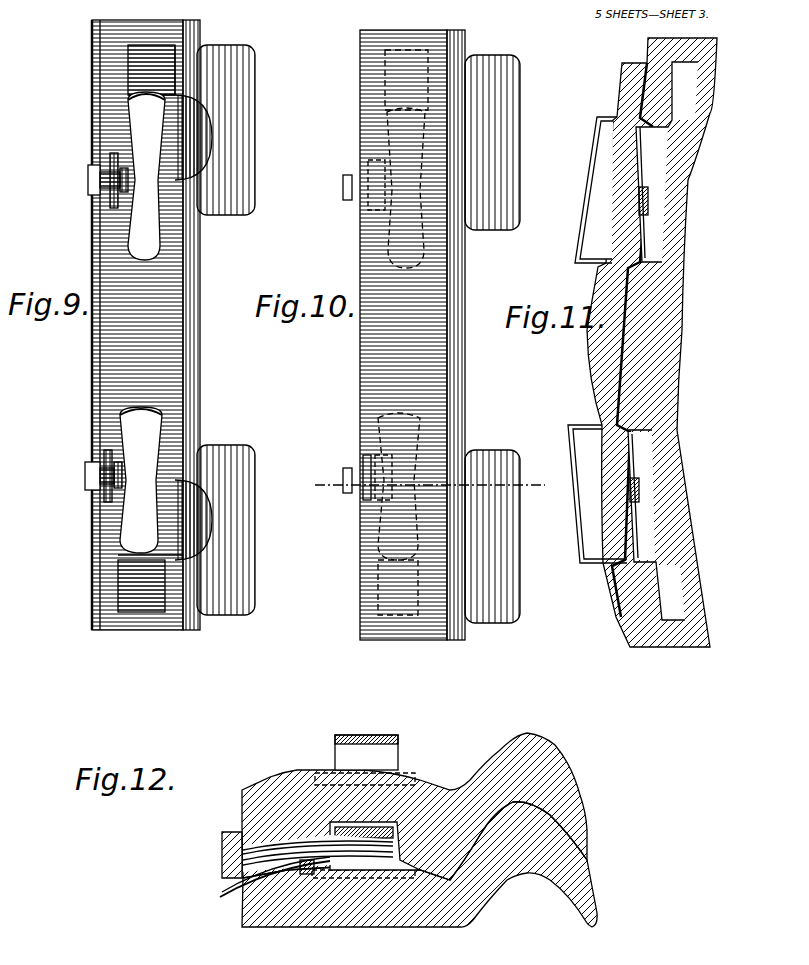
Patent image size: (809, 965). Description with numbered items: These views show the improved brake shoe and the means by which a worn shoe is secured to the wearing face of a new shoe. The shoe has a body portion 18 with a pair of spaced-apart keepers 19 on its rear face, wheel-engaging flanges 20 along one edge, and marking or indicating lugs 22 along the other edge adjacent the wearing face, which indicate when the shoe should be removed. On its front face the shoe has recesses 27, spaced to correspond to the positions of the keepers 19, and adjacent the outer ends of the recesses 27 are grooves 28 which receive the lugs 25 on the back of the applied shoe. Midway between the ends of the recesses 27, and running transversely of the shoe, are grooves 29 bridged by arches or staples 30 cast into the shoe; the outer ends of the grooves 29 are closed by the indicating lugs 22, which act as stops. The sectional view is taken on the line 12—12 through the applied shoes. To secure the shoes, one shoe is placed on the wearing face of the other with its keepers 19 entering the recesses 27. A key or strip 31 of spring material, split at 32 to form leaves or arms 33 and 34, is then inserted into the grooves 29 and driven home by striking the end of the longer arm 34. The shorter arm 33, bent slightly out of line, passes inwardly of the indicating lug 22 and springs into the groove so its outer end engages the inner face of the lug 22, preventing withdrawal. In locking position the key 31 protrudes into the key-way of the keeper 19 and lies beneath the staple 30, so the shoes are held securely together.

In FIG. 10, the section line 12 is at (426, 488).
In FIG. 9, the body portion 18 is at (190, 320).
In FIG. 10, the body portion 18 is at (424, 335).
In FIG. 11, the body portion 18 is at (620, 147).
In FIG. 12, the body portion 18 is at (312, 770).
In FIG. 11, the keepers 19 is at (585, 168).
In FIG. 12, the keepers 19 is at (360, 735).
In FIG. 9, the wheel-engaging flanges 20 is at (243, 165).
In FIG. 10, the wheel-engaging flanges 20 is at (487, 215).
In FIG. 12, the wheel-engaging flanges 20 is at (570, 770).
In FIG. 9, the indicating lugs 22 is at (88, 168).
In FIG. 10, the indicating lugs 22 is at (343, 196).
In FIG. 11, the lugs 25 is at (640, 63).
In FIG. 9, the recesses 27 is at (130, 118).
In FIG. 9, the grooves 28 is at (142, 314).
In FIG. 10, the grooves 28 is at (403, 332).
In FIG. 9, the grooves 29 is at (107, 160).
In FIG. 9, the staples 30 is at (113, 185).
In FIG. 12, the staples 30 is at (300, 870).
In FIG. 11, the key 31 is at (648, 200).
In FIG. 12, the key 31 is at (375, 865).
In FIG. 12, the split 32 is at (240, 868).
In FIG. 12, the arm 33 is at (245, 855).
In FIG. 12, the arm 34 is at (228, 885).